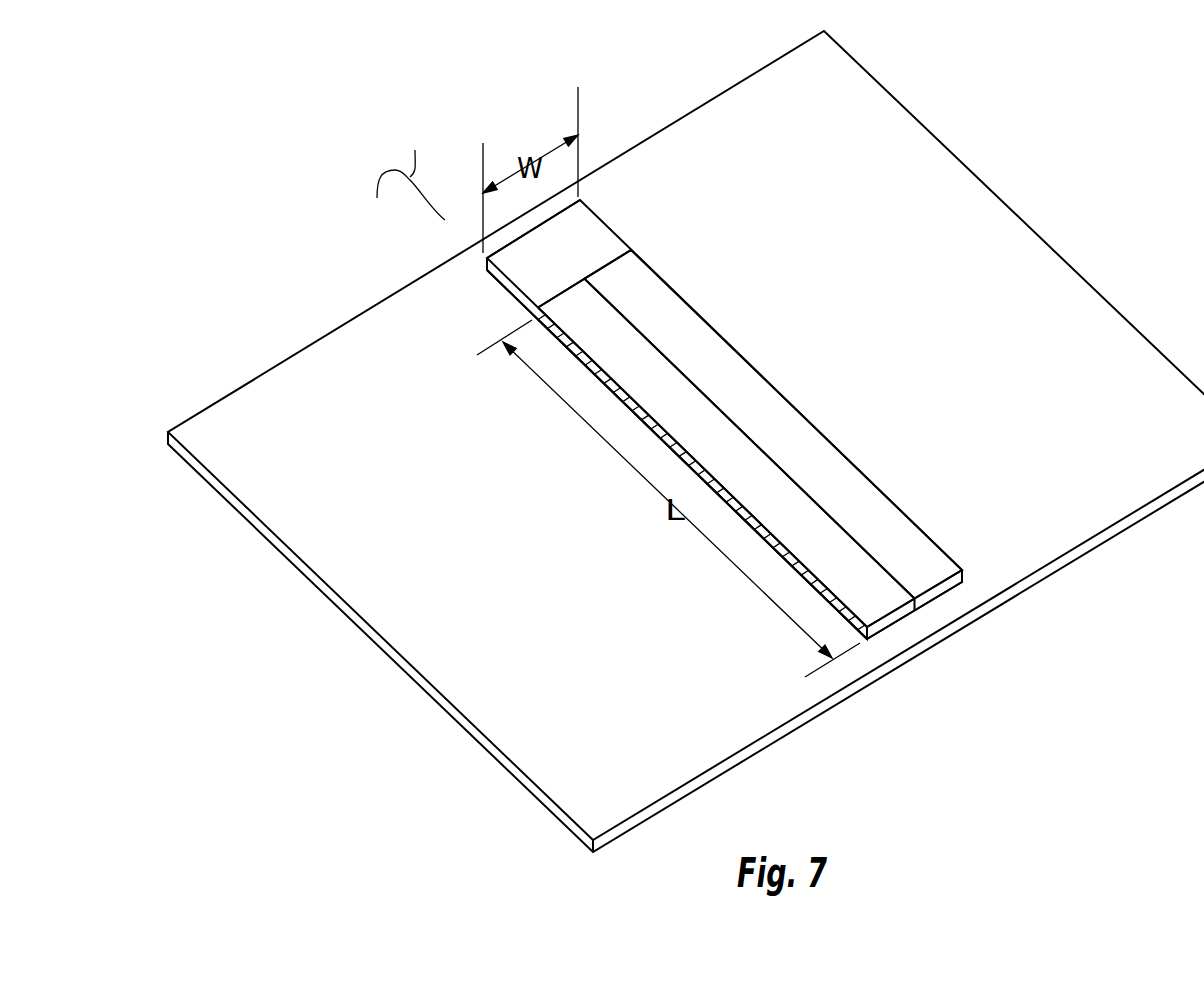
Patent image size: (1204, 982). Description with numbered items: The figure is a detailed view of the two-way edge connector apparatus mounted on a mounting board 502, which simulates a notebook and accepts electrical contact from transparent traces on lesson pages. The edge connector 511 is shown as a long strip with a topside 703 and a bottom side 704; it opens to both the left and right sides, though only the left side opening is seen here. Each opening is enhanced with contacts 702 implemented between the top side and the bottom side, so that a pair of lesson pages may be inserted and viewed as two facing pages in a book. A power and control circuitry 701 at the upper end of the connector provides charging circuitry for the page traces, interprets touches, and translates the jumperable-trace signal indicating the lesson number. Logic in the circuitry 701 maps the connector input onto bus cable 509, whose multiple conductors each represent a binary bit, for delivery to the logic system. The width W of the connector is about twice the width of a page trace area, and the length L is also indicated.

The mounting board 502 is at (330, 330).
The bus cable 509 is at (517, 241).
The power and control circuitry 701 is at (583, 247).
The edge connector 511 is at (630, 338).
The contacts 702 is at (643, 421).
The topside 703 is at (775, 482).
The bottom side 704 is at (893, 625).